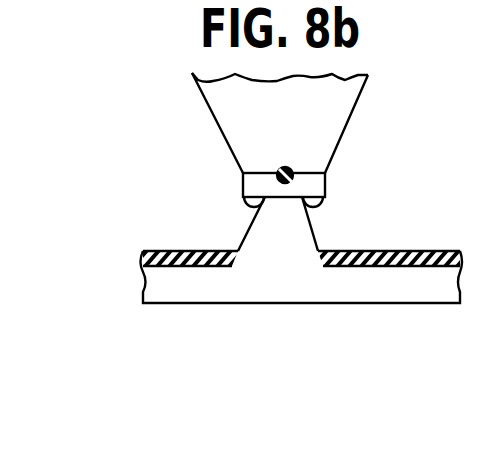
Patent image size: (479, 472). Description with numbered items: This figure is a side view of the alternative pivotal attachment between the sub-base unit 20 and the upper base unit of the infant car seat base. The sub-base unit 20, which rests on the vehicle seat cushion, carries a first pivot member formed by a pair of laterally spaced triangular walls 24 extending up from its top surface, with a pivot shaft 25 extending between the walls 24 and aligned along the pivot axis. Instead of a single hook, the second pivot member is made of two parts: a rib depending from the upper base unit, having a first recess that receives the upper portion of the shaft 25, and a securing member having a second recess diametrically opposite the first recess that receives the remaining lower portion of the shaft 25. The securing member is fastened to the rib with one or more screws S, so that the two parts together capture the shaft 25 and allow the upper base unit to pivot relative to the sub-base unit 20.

The pivot shaft 25 is at (297, 173).
The screws S is at (240, 202).
The triangular walls 24 is at (292, 233).
The sub-base unit 20 is at (388, 288).